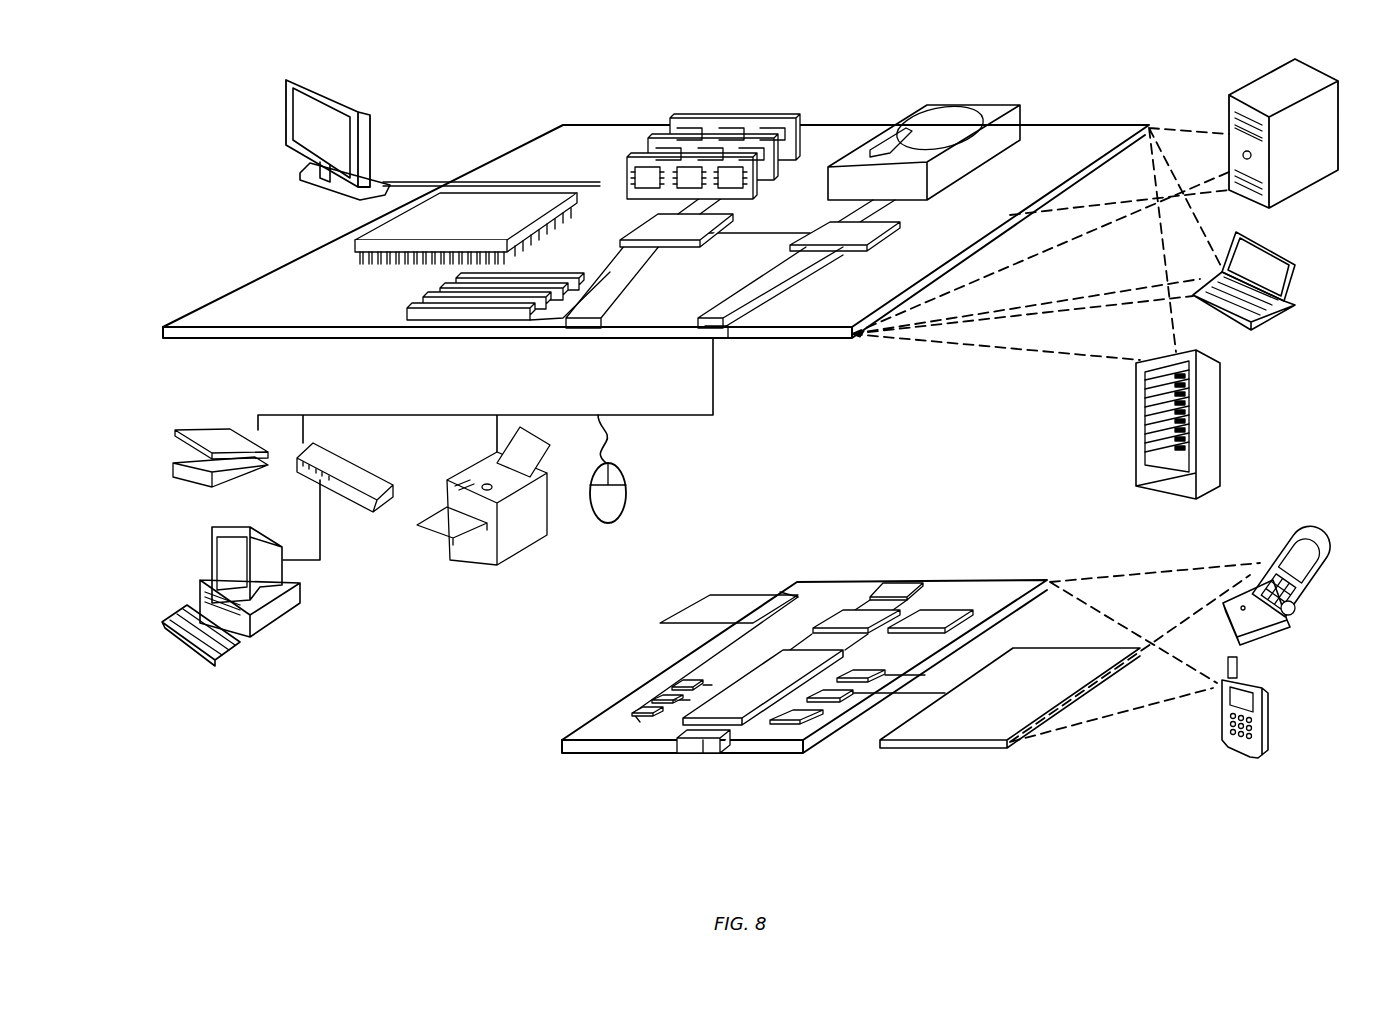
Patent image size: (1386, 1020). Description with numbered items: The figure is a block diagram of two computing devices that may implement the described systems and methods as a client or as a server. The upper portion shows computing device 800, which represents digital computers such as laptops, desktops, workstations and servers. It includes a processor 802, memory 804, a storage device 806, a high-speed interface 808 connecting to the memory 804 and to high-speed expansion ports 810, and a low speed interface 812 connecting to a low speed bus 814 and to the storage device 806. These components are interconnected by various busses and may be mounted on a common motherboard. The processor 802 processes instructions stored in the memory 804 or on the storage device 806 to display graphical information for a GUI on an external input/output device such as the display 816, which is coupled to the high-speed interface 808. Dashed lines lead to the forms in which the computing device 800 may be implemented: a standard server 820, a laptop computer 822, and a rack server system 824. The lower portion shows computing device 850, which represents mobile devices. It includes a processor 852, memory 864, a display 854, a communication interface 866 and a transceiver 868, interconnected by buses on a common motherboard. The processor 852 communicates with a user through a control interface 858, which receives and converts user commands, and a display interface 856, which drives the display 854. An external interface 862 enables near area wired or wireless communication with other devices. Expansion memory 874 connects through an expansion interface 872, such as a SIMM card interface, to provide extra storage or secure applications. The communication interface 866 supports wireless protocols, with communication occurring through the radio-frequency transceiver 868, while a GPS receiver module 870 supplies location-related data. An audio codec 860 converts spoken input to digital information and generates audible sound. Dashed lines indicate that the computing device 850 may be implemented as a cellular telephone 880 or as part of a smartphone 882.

The computing device 800 is at (758, 353).
The processor 802 is at (355, 240).
The memory 804 is at (688, 116).
The storage device 806 is at (922, 110).
The high-speed interface 808 is at (655, 228).
The high-speed expansion ports 810 is at (427, 300).
The low speed interface 812 is at (827, 226).
The low speed bus 814 is at (725, 334).
The display 816 is at (290, 78).
The standard server 820 is at (1229, 110).
The laptop computer 822 is at (1295, 250).
The rack server system 824 is at (1138, 448).
The computing device 850 is at (534, 753).
The processor 852 is at (737, 708).
The display 854 is at (970, 727).
The display interface 856 is at (803, 717).
The control interface 858 is at (837, 693).
The audio codec 860 is at (863, 673).
The external interface 862 is at (702, 750).
The memory 864 is at (657, 703).
The communication interface 866 is at (857, 620).
The transceiver 868 is at (932, 617).
The GPS receiver module 870 is at (900, 580).
The expansion interface 872 is at (780, 592).
The expansion memory 874 is at (710, 595).
The cellular telephone 880 is at (1277, 536).
The smartphone 882 is at (1220, 720).